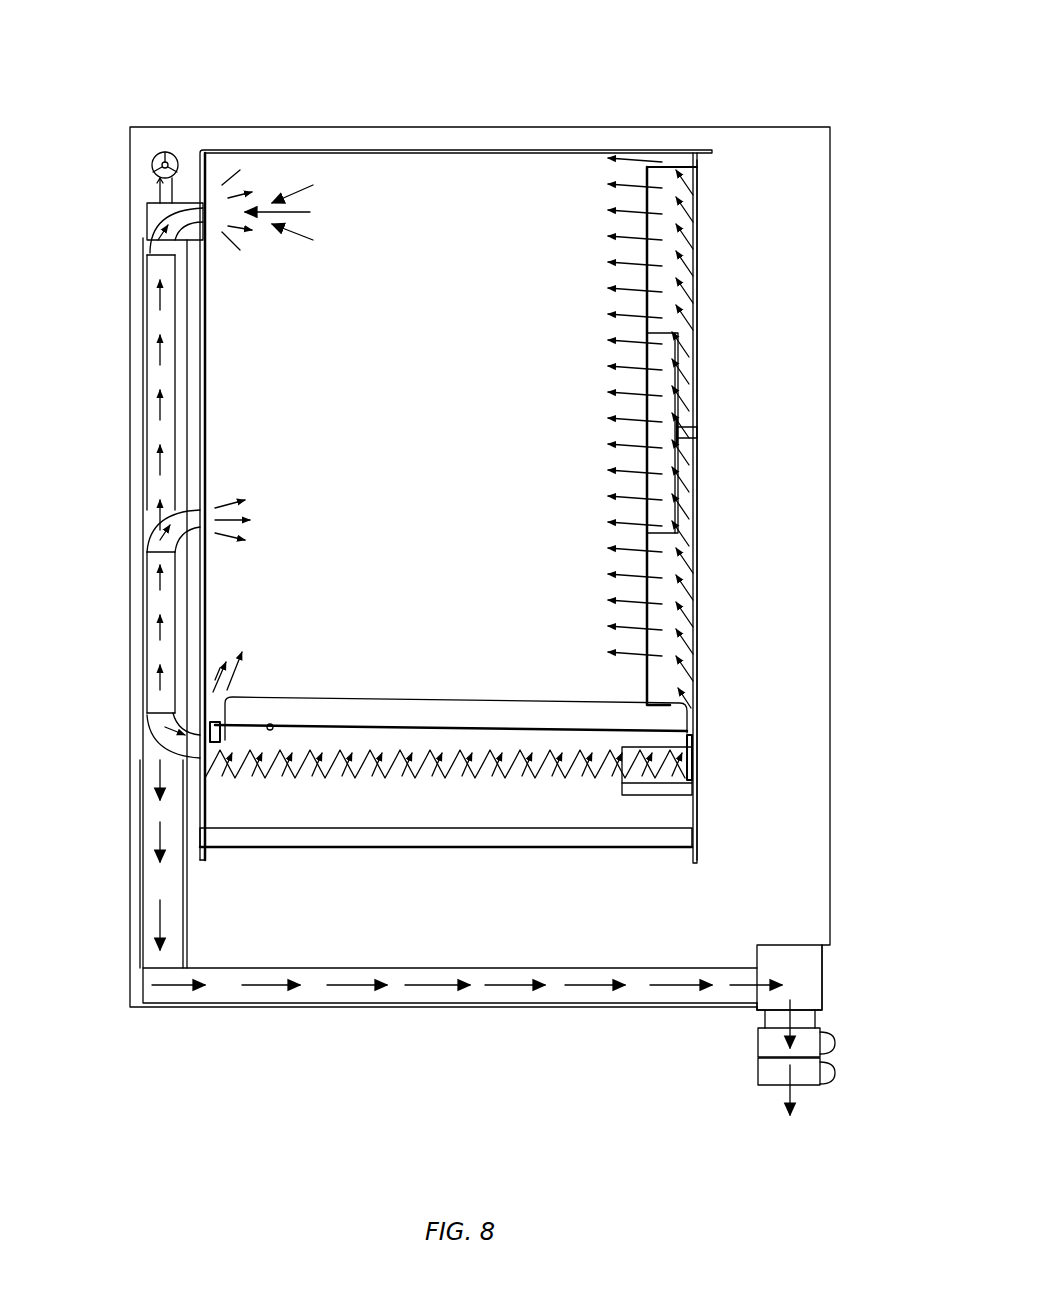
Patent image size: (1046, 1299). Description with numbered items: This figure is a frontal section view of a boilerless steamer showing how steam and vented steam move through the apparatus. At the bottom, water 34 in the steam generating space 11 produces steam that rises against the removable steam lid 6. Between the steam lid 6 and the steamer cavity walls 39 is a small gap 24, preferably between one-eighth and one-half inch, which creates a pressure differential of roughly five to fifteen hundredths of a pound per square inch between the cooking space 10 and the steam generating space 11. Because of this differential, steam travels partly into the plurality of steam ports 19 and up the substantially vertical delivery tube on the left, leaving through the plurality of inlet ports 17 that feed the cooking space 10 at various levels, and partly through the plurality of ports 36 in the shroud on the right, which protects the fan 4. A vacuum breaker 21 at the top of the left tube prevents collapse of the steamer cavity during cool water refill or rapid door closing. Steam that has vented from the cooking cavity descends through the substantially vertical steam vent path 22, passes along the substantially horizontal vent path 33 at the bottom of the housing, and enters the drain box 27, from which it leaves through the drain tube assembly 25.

The fan 4 is at (678, 370).
The removable steam lid 6 is at (470, 705).
The cooking space 10 is at (440, 195).
The steam generating space 11 is at (340, 810).
The inlet ports 17 is at (165, 535).
The steam ports 19 is at (170, 742).
The vacuum breaker 21 is at (152, 150).
The steam vent path 22 is at (150, 935).
The gap 24 is at (210, 735).
The drain tube assembly 25 is at (810, 1070).
The drain box 27 is at (810, 965).
The horizontal vent path 33 is at (395, 985).
The water 34 is at (578, 776).
The ports 36 is at (672, 583).
The steamer cavity walls 39 is at (700, 675).